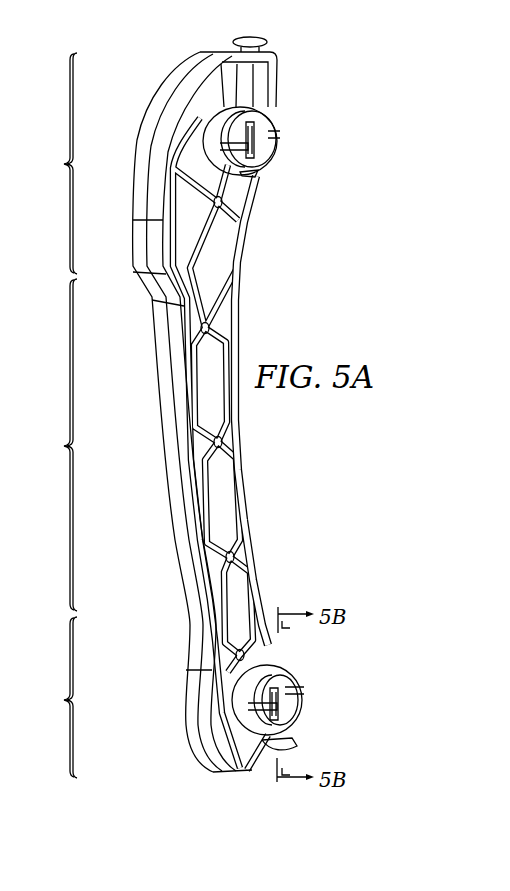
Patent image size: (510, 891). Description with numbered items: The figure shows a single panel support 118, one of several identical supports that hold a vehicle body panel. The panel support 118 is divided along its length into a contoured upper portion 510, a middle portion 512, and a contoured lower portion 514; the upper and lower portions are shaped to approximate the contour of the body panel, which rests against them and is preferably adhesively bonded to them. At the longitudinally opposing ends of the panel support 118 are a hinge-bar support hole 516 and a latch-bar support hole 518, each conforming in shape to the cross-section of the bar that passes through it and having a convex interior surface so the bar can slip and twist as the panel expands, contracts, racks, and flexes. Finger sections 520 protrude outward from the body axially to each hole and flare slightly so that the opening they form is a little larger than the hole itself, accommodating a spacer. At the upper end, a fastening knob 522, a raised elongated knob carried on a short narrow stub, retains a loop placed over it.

The panel support 118 is at (178, 77).
The contoured upper portion 510 is at (51, 163).
The middle portion 512 is at (51, 445).
The contoured lower portion 514 is at (51, 697).
The hinge-bar support hole 516 is at (292, 135).
The latch-bar support hole 518 is at (268, 147).
The finger sections 520 is at (228, 121).
The fastening knob 522 is at (254, 38).